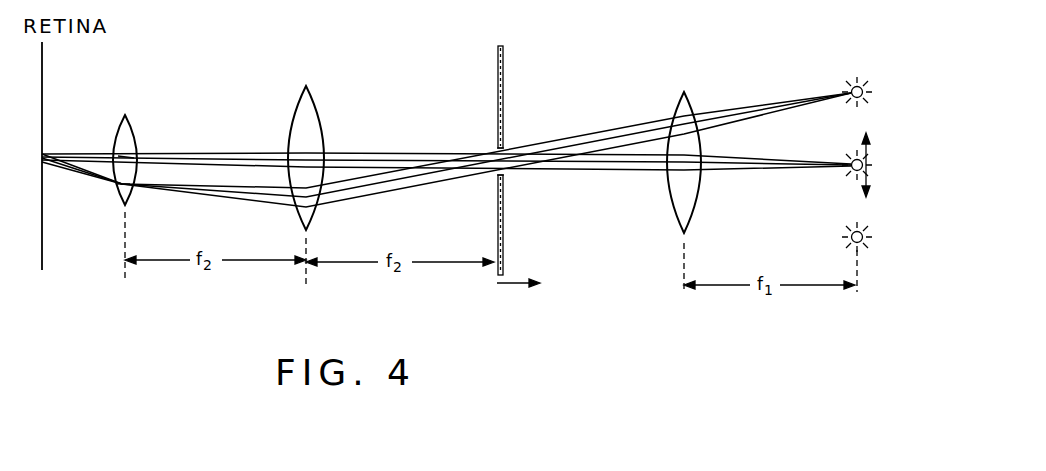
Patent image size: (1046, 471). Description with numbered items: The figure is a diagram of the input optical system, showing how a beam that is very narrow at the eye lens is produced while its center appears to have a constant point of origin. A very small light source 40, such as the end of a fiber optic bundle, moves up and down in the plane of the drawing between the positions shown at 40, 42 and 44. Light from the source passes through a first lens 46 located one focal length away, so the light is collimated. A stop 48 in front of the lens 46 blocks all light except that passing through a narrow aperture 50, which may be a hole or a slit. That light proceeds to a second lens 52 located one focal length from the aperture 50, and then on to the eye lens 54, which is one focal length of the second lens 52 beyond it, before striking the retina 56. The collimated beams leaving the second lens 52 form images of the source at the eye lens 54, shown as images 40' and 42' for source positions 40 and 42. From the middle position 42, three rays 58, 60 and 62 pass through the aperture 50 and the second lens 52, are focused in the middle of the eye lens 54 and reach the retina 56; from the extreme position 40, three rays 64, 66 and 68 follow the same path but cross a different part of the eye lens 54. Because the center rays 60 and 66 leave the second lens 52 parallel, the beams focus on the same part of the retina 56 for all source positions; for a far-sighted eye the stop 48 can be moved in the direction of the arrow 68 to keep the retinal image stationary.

The light source 40 is at (842, 80).
The middle position of light source 42 is at (846, 161).
The extreme position of light source 44 is at (848, 233).
The first lens 46 is at (687, 98).
The stop 48 is at (505, 85).
The aperture 50 is at (497, 148).
The second lens 52 is at (320, 112).
The eye lens 54 is at (114, 140).
The retina 56 is at (43, 80).
The ray 58 is at (706, 156).
The center ray 60 is at (751, 158).
The ray 62 is at (736, 173).
The ray 64 is at (742, 113).
The center ray 66 is at (768, 106).
The ray / arrow 68 is at (779, 112).
The image of light source 40' is at (139, 201).
The image of light source 42' is at (143, 147).